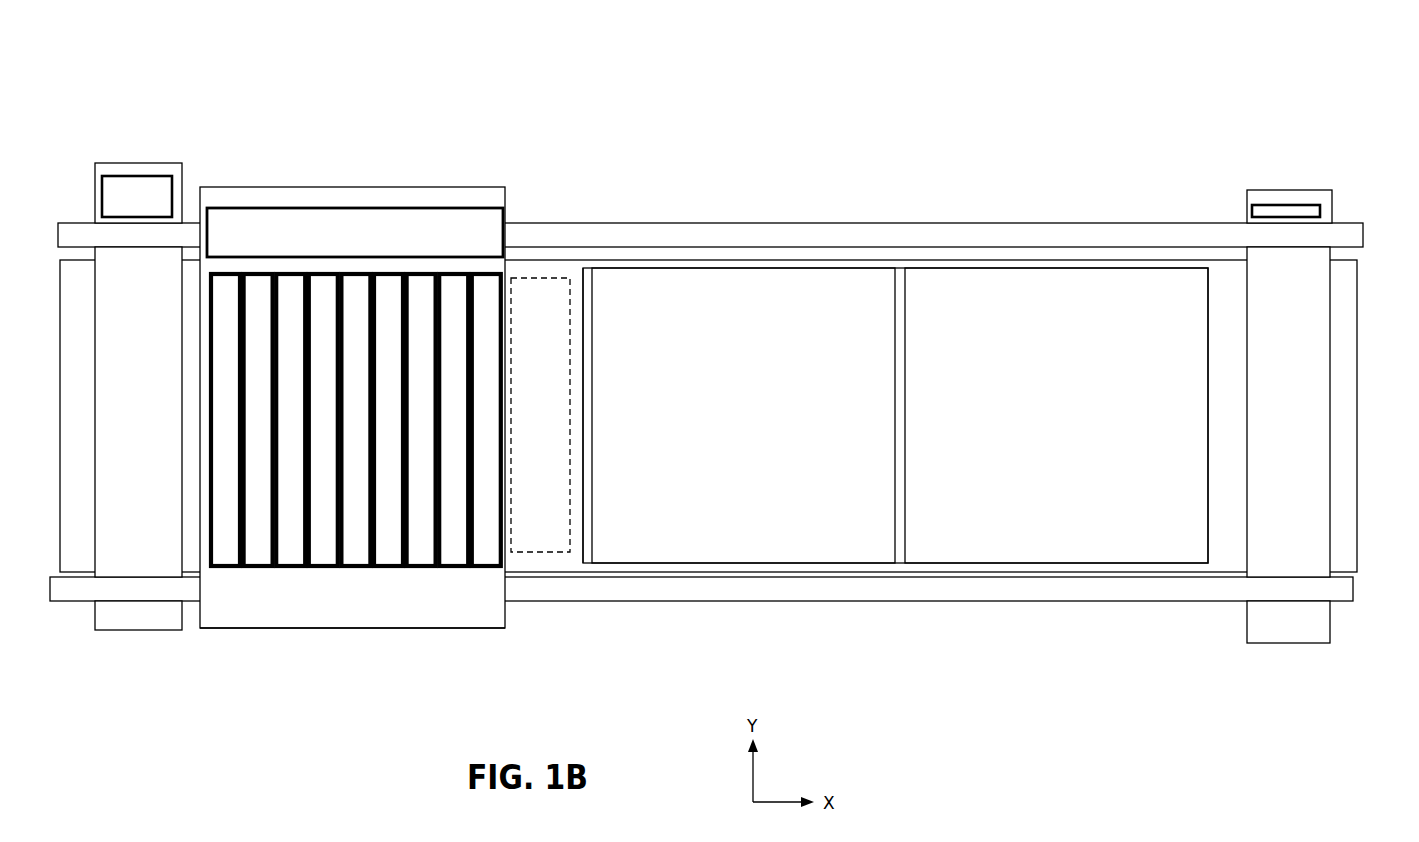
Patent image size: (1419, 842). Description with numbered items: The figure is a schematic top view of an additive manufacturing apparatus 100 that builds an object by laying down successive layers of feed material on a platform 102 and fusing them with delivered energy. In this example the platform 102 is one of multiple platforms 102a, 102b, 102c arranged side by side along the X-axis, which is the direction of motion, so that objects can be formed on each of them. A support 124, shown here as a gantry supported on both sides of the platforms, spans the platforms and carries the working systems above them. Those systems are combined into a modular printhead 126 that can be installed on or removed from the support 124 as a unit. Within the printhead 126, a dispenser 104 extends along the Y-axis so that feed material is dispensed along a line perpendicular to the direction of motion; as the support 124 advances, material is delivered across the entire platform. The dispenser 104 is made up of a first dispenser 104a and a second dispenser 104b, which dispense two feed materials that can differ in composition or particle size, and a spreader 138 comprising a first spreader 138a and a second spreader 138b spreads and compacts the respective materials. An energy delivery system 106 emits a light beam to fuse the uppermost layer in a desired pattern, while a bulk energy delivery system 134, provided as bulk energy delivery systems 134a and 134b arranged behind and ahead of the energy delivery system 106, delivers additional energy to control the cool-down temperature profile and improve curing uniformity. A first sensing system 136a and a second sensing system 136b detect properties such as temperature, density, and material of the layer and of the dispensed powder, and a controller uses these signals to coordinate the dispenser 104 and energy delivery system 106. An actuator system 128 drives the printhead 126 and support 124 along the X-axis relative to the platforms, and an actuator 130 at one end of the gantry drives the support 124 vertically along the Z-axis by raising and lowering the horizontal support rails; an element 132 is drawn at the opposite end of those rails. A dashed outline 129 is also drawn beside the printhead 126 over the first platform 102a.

The additive manufacturing apparatus 100 is at (825, 176).
The platform 102 is at (567, 268).
The platform 102a is at (587, 373).
The platform 102b is at (857, 540).
The platform 102c is at (1177, 540).
The dispenser 104 is at (529, 493).
The first dispenser 104a is at (422, 552).
The second dispenser 104b is at (487, 556).
The energy delivery system 106 is at (290, 283).
The support 124 is at (358, 187).
The printhead 126 is at (352, 362).
The actuator system 128 is at (466, 208).
The panel segment 129 is at (560, 550).
The actuator 130 is at (159, 190).
The second roller 132 is at (1345, 562).
The bulk energy delivery system 134 is at (198, 503).
The bulk energy delivery system 134a is at (258, 566).
The bulk energy delivery system 134b is at (320, 567).
The first sensing system 136a is at (220, 423).
The second sensing system 136b is at (357, 567).
The spreader 138 is at (355, 292).
The first spreader 138a is at (460, 287).
The second spreader 138b is at (392, 295).